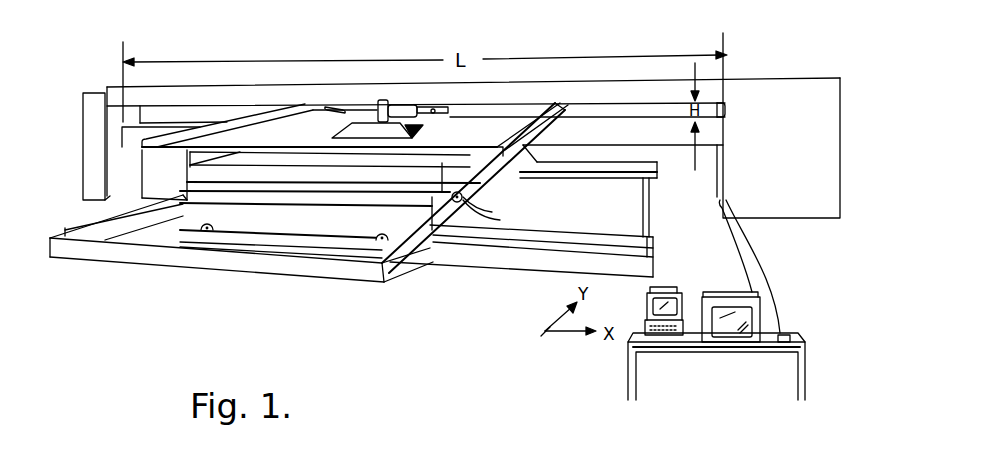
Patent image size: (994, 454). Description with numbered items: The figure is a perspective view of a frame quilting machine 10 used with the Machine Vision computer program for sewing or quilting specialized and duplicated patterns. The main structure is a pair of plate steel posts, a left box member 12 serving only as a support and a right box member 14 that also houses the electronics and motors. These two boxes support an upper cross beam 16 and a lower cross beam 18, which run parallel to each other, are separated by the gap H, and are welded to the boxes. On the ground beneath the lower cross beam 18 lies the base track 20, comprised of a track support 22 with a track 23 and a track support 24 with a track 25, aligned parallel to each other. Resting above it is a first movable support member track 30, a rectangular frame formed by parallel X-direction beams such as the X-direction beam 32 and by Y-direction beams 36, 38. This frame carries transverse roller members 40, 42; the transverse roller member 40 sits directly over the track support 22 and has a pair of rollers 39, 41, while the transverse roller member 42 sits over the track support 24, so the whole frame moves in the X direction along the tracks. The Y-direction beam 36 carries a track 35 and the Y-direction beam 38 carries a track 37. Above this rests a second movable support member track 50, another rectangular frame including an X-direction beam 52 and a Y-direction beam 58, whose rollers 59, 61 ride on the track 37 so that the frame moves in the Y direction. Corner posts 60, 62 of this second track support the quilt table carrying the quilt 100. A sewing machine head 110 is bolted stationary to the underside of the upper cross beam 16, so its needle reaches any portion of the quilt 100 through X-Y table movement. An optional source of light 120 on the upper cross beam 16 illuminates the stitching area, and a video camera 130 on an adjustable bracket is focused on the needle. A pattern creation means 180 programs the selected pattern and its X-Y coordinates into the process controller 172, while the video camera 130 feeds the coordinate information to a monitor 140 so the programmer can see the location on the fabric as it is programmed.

The frame quilting machine 10 is at (661, 76).
The left box member 12 is at (96, 99).
The right box member 14 is at (832, 147).
The upper cross beam 16 is at (617, 90).
The lower cross beam 18 is at (613, 143).
The base track 20 is at (660, 235).
The track support 22 is at (530, 267).
The track 23 is at (492, 252).
The track support 24 is at (627, 177).
The track 25 is at (641, 161).
The first movable support member track 30 is at (393, 280).
The X-direction beam 32 is at (308, 273).
The track 35 is at (148, 208).
The Y-direction beam 36 is at (112, 230).
The track 37 is at (460, 208).
The Y-direction beam 38 is at (483, 200).
The roller 39 is at (190, 240).
The transverse roller member 40 is at (262, 222).
The roller 41 is at (375, 246).
The transverse roller member 42 is at (498, 190).
The second movable support member track 50 is at (493, 193).
The X-direction beam 52 is at (433, 206).
The Y-direction beam 58 is at (492, 200).
The roller 59 is at (462, 186).
The post 60 is at (188, 162).
The roller 61 is at (526, 144).
The post 62 is at (442, 162).
The quilt 100 is at (330, 150).
The sewing machine head 110 is at (413, 140).
The source of light 120 is at (334, 114).
The video camera 130 is at (413, 75).
The monitor 140 is at (707, 343).
The process controller 172 is at (645, 318).
The pattern creation means 180 is at (789, 334).